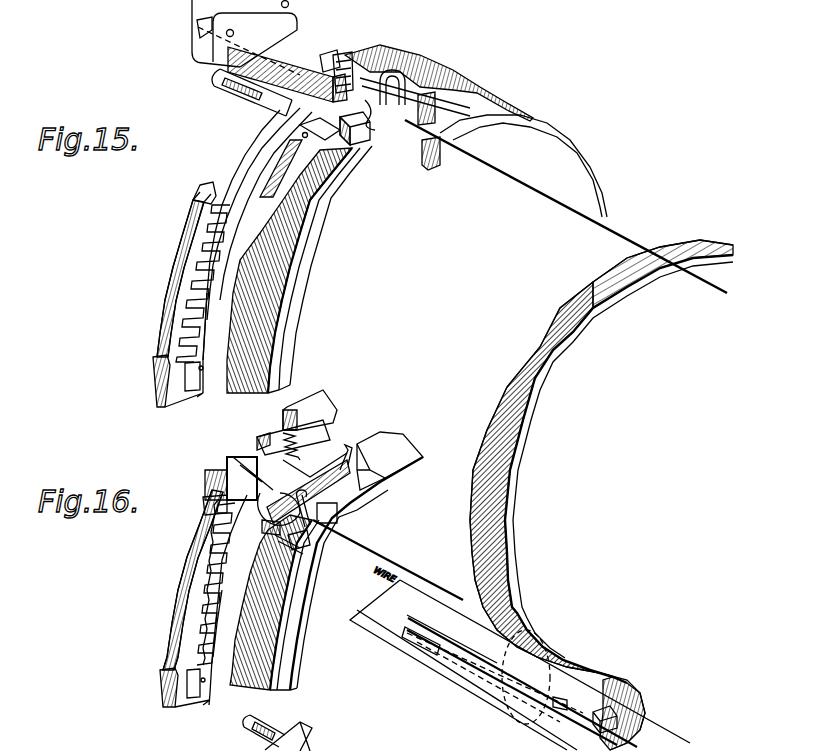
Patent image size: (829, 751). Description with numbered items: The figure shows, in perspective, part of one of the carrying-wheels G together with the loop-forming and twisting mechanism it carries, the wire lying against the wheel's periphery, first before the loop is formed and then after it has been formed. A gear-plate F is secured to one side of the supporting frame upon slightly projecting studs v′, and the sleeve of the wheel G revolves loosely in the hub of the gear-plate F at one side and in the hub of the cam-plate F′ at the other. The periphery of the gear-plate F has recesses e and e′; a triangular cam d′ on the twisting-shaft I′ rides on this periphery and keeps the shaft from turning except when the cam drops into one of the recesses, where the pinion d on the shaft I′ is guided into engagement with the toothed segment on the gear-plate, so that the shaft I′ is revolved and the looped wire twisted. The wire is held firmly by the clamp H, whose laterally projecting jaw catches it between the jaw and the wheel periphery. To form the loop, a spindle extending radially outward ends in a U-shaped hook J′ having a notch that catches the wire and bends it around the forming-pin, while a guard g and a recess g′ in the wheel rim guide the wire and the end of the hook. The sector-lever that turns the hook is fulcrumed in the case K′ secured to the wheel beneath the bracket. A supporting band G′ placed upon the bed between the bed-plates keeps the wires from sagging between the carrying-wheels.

In FIG. 15, the gear-plate F is at (210, 163).
In FIG. 16, the cam-plate F′ is at (327, 400).
In FIG. 15, the recess e is at (259, 214).
In FIG. 16, the recess e is at (293, 431).
In FIG. 15, the recess e′ is at (185, 228).
In FIG. 16, the recess e′ is at (203, 540).
In FIG. 16, the twisting-shaft I′ is at (315, 465).
In FIG. 15, the carrying-wheel G is at (318, 243).
In FIG. 16, the carrying-wheel G is at (326, 561).
In FIG. 15, the supporting band G′ is at (585, 340).
In FIG. 15, the clamp H is at (431, 160).
In FIG. 16, the clamp H is at (311, 491).
In FIG. 15, the U-shaped hook J′ is at (400, 68).
In FIG. 16, the U-shaped hook J′ is at (305, 491).
In FIG. 15, the case K′ is at (388, 148).
In FIG. 16, the case K′ is at (270, 545).
In FIG. 15, the pinion d is at (348, 55).
In FIG. 16, the pinion d is at (237, 456).
In FIG. 16, the triangular cam d′ is at (215, 470).
In FIG. 15, the guide g is at (320, 136).
In FIG. 16, the guide g is at (272, 514).
In FIG. 15, the recess g′ is at (372, 130).
In FIG. 15, the stud v′ is at (246, 37).
In FIG. 16, the stud v′ is at (348, 448).